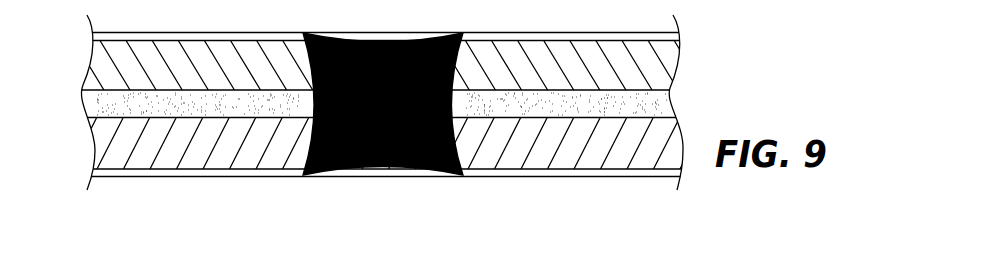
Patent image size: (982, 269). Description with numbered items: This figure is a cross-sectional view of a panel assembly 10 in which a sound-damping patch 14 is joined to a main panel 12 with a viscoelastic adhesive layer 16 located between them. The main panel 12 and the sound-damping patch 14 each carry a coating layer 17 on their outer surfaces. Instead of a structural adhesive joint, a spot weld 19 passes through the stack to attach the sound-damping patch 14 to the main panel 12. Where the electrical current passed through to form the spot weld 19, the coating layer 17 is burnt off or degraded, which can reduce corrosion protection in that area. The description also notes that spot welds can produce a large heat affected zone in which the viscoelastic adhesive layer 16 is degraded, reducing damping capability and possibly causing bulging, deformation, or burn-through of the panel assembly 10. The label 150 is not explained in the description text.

The panel assembly 10 is at (707, 20).
The main panel 12 is at (674, 139).
The sound-damping patch 14 is at (668, 55).
The viscoelastic adhesive layer 16 is at (102, 107).
The coating layer 17 is at (529, 33).
The spot weld 19 is at (423, 33).
The region 150 is at (622, 7).